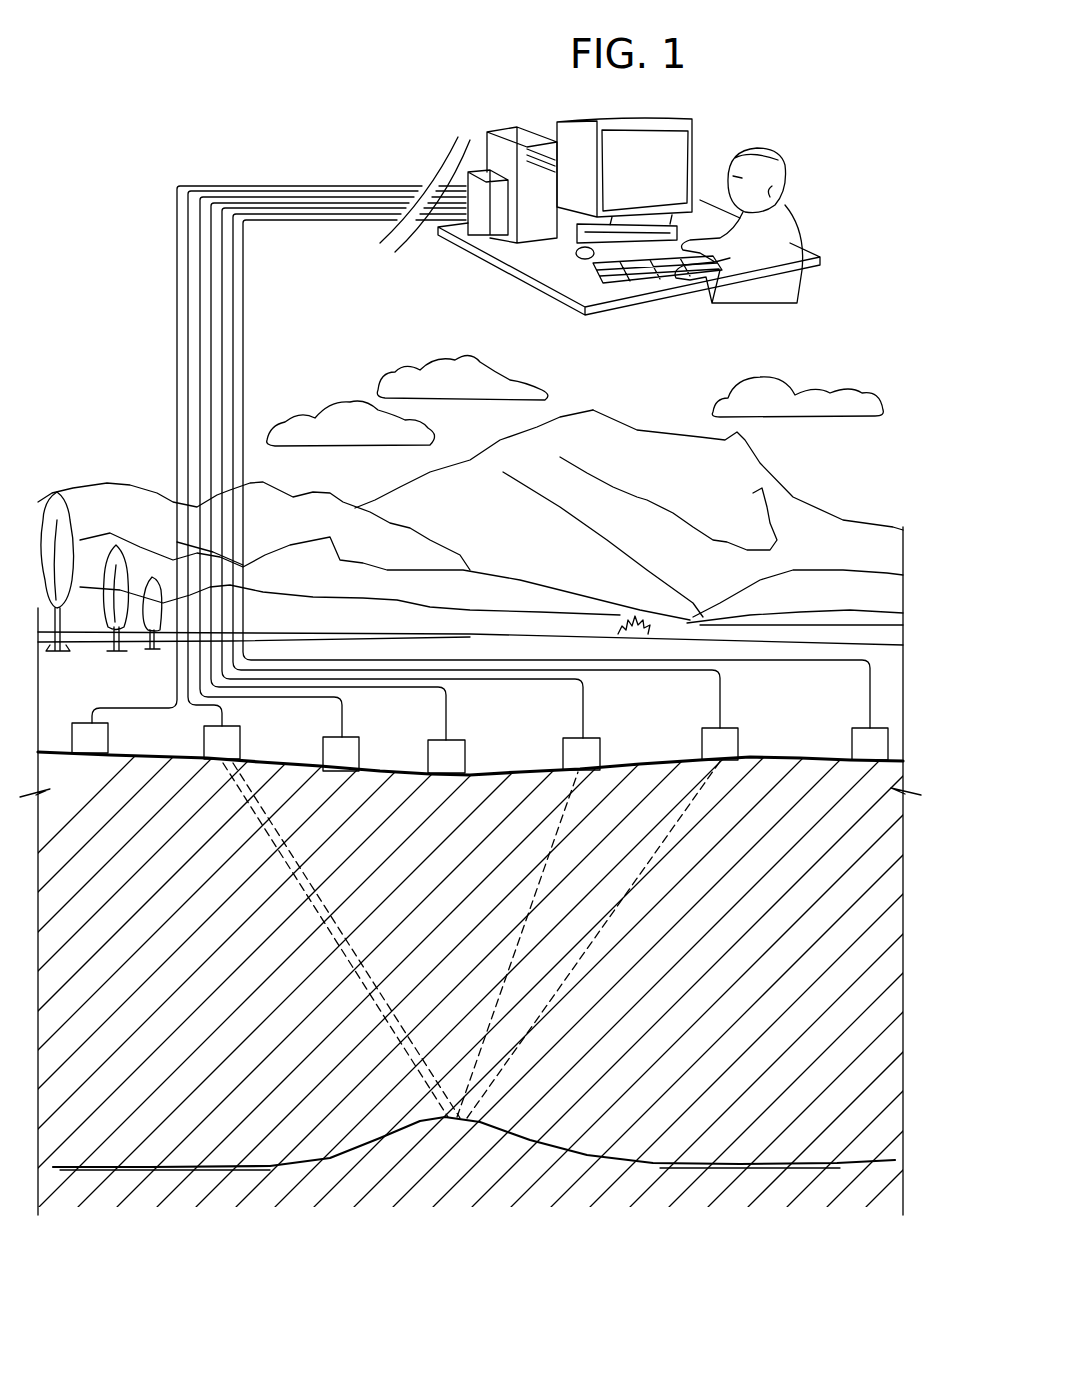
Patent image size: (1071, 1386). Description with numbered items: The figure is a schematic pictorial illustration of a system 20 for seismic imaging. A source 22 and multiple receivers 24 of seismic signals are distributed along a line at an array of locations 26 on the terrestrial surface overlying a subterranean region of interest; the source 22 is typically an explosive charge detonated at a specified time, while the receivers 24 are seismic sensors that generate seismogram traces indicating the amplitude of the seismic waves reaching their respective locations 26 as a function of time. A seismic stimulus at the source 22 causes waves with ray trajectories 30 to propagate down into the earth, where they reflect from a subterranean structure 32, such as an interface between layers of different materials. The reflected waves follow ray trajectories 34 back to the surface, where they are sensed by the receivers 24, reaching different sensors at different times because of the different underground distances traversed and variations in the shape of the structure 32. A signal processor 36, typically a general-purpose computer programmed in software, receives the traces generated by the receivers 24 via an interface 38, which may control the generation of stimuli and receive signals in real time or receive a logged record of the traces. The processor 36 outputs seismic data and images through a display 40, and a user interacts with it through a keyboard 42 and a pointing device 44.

The system for seismic imaging 20 is at (212, 94).
The source 22 is at (240, 736).
The receivers 24 is at (72, 729).
The locations 26 is at (88, 757).
The ray trajectories 30 is at (358, 984).
The subterranean structure 32 is at (580, 1158).
The ray trajectories 34 is at (538, 880).
The signal processor 36 is at (497, 128).
The interface 38 is at (468, 176).
The display 40 is at (692, 132).
The keyboard 42 is at (605, 290).
The pointing device 44 is at (577, 258).